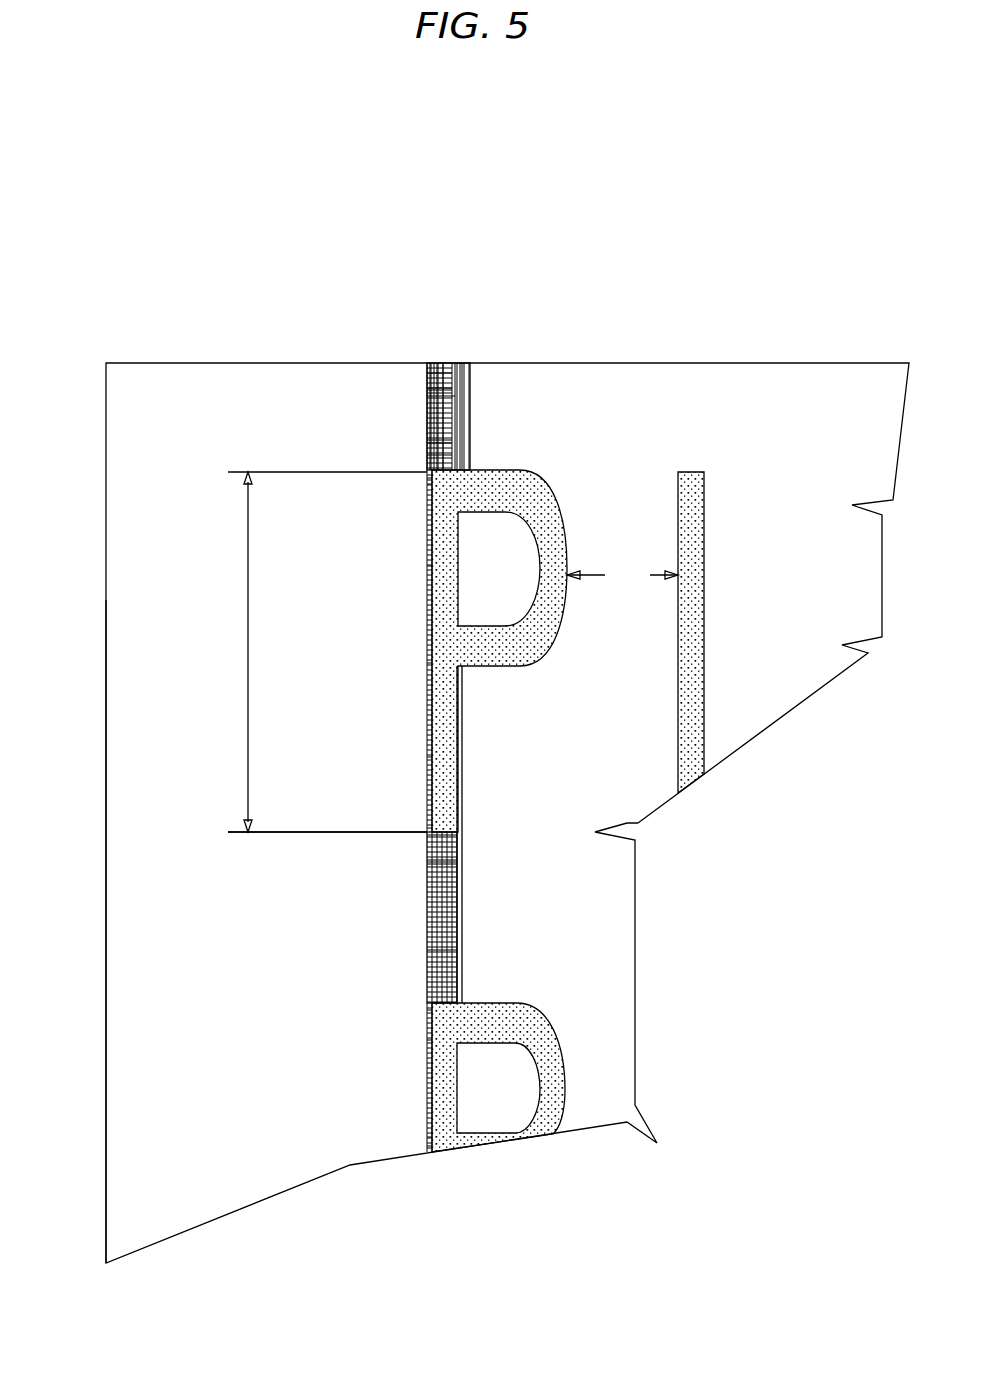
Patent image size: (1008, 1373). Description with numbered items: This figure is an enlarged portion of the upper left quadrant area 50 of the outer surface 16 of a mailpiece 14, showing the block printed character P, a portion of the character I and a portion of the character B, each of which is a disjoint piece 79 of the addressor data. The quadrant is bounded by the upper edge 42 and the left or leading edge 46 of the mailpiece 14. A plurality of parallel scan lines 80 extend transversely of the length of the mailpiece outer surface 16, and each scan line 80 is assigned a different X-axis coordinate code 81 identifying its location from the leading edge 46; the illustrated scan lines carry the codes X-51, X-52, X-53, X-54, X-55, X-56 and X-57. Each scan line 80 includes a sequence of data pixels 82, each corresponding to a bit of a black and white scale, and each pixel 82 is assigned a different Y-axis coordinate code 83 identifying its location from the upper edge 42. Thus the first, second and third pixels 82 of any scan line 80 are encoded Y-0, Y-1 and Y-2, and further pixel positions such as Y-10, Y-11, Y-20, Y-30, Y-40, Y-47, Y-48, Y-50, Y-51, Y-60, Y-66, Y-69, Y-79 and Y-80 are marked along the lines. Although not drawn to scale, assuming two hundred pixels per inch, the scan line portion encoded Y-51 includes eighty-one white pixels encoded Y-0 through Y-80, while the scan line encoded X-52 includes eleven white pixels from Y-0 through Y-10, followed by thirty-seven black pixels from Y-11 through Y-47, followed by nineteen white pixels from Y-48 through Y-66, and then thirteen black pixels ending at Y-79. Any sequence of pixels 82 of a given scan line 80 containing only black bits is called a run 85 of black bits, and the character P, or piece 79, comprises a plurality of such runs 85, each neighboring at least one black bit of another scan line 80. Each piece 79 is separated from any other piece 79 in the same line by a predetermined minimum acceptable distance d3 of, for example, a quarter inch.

The mailpiece 14 is at (665, 335).
The mailpiece outer surface 16 is at (125, 428).
The upper edge 42 is at (848, 363).
The left edge 46 is at (106, 707).
The block printed character 79 is at (540, 510).
The scan line 80 is at (427, 455).
The X-axis coordinate code 81 is at (265, 212).
The pixel 82 is at (427, 440).
The Y-axis coordinate code 83 is at (248, 1068).
The run of black bits 85 is at (327, 652).
The upper left quadrant area 50 is at (296, 824).
The minimum acceptable distance d3 is at (622, 575).
The X-axis coordinate code X-51 is at (428, 367).
The X-axis coordinate code X-52 is at (430, 364).
The X-axis coordinate code X-53 is at (437, 364).
The X-axis coordinate code X-54 is at (443, 364).
The X-axis coordinate code X-55 is at (455, 364).
The column electrode X-56 is at (462, 364).
The column electrode X-57 is at (475, 364).
The Y-axis coordinate code Y-0 is at (448, 372).
The Y-axis coordinate code Y-1 is at (452, 390).
The Y-axis coordinate code Y-2 is at (455, 396).
The Y-axis coordinate code Y-10 is at (427, 478).
The Y-axis coordinate code Y-11 is at (427, 484).
The row electrode Y-20 is at (427, 566).
The row electrode Y-30 is at (427, 663).
The row electrode Y-40 is at (427, 757).
The Y-axis coordinate code Y-47 is at (427, 828).
The Y-axis coordinate code Y-48 is at (427, 835).
The row electrode Y-50 is at (427, 860).
The Y-axis coordinate code Y-51 is at (427, 864).
The row electrode Y-60 is at (427, 950).
The Y-axis coordinate code Y-66 is at (427, 1010).
The row electrode Y-69 is at (427, 1040).
The Y-axis coordinate code Y-79 is at (427, 1137).
The Y-axis coordinate code Y-80 is at (427, 1146).